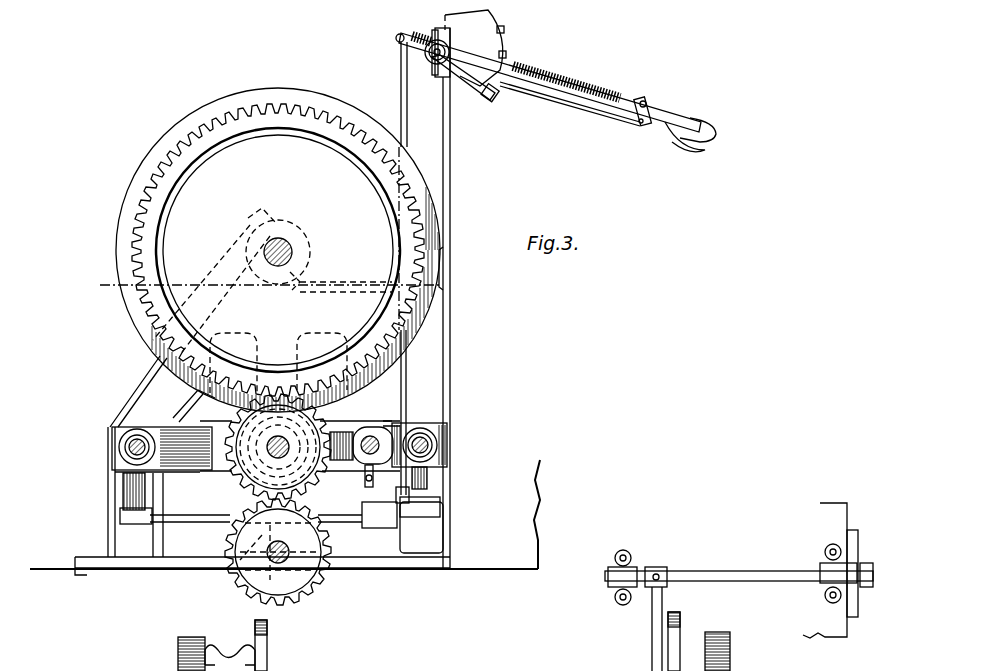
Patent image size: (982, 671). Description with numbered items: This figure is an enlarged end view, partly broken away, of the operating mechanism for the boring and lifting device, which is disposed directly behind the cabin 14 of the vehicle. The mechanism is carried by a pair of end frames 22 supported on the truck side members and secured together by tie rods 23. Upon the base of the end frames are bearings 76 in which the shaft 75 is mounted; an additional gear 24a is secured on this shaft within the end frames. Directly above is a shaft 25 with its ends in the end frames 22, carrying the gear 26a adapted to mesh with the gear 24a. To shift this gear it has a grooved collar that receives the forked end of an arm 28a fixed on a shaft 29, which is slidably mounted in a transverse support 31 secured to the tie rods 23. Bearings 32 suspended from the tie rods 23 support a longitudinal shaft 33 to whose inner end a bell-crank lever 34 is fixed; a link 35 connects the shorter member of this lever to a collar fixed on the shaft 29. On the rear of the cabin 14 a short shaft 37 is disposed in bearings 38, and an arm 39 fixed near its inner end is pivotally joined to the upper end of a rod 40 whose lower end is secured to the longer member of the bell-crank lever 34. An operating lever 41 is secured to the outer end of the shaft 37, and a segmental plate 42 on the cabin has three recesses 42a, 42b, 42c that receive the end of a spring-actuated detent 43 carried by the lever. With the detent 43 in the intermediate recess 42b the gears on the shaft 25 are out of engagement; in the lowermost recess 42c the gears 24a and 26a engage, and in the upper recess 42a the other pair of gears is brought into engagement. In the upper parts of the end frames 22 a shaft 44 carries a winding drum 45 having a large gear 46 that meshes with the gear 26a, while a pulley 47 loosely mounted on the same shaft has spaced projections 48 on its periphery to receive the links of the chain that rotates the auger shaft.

The cabin 14 is at (452, 197).
The end frames 22 is at (152, 380).
The rods 23 is at (125, 447).
The gear 24a is at (286, 582).
The shaft 25 is at (232, 470).
The gear 26a is at (274, 462).
The arm 28a is at (340, 440).
The shaft 29 is at (400, 423).
The transverse support 31 is at (112, 428).
The bearings 32 is at (128, 490).
The longitudinal shaft 33 is at (196, 523).
The bell-crank lever 34 is at (375, 516).
The link 35 is at (365, 480).
The short shaft 37 is at (430, 42).
The bearings 38 is at (436, 97).
The arm 39 is at (423, 60).
The rod 40 is at (399, 92).
The operating lever 41 is at (664, 115).
The segmental plate 42 is at (460, 78).
The recess 42a is at (503, 29).
The recess 42b is at (506, 55).
The recess 42c is at (492, 102).
The spring-actuated detent 43 is at (508, 90).
The shaft 44 is at (287, 250).
The winding drum 45 is at (194, 110).
The large gear 46 is at (263, 126).
The pulley 47 is at (228, 655).
The spaced projections 48 is at (492, 641).
The shaft 75 is at (290, 560).
The bearings 76 is at (260, 536).